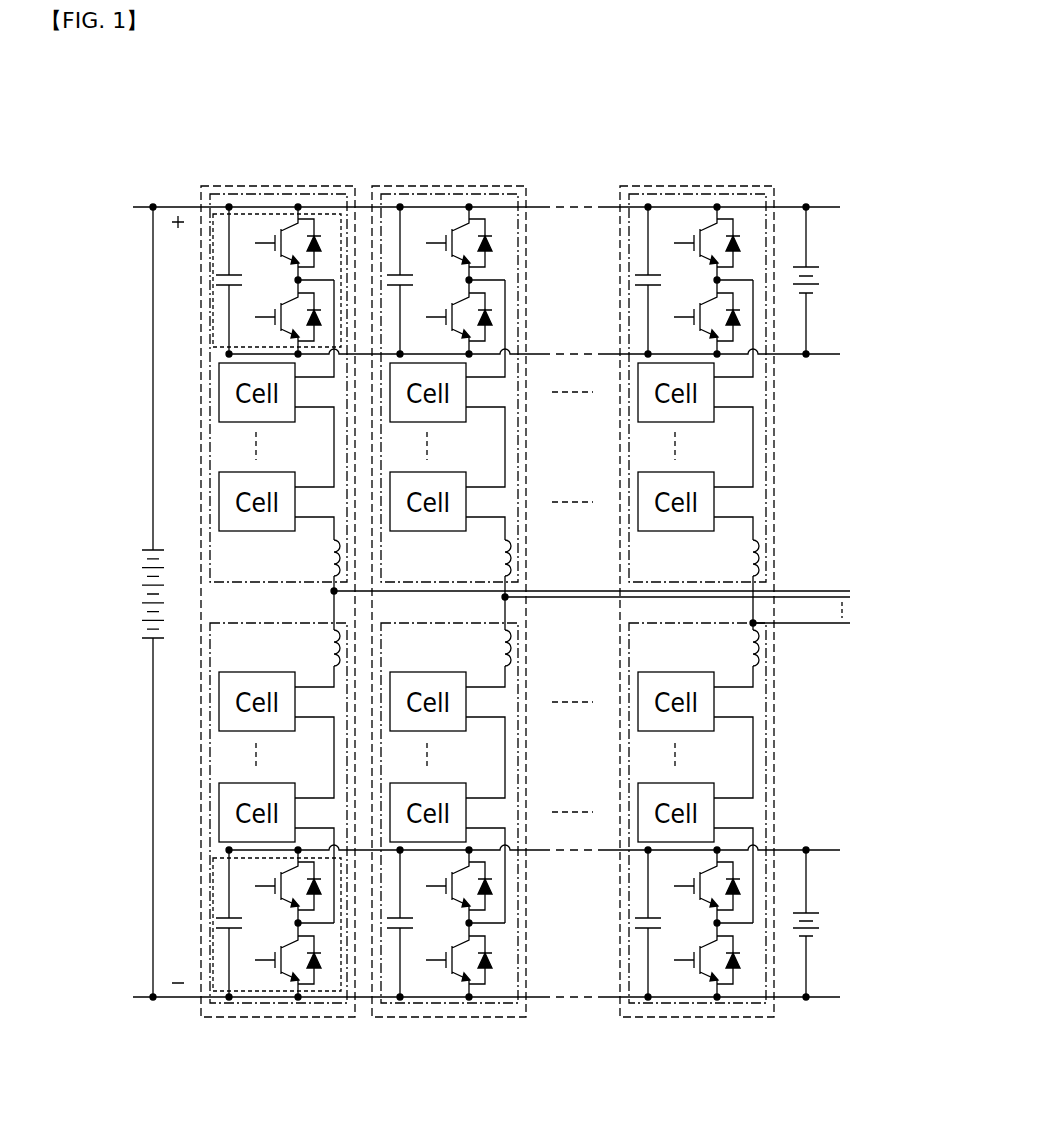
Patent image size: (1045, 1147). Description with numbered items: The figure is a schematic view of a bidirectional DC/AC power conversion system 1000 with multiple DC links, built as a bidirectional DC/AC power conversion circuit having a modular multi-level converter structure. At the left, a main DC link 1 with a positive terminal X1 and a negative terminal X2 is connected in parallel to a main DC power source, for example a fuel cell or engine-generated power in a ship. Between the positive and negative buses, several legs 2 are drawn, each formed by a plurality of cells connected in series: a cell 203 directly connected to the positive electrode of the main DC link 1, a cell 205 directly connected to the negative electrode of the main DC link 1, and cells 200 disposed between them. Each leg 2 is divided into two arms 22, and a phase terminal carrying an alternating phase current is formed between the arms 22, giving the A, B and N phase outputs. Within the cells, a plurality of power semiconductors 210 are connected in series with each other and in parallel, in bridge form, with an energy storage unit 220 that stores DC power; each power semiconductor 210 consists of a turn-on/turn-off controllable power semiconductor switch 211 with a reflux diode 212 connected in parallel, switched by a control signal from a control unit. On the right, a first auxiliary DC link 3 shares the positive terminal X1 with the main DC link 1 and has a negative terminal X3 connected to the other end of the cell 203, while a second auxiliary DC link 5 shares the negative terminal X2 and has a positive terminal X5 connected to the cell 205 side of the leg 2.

The DC/AC power conversion system 1000 is at (98, 105).
The main DC link 1 is at (106, 561).
The leg 2 is at (233, 186).
The first auxiliary DC link 3 is at (852, 277).
The second auxiliary DC link 5 is at (852, 918).
The arm 22 is at (212, 360).
The cell 200 is at (219, 505).
The cell 203 is at (322, 214).
The cell 205 is at (327, 990).
The power semiconductor 210 is at (253, 874).
The power semiconductor switch 211 is at (275, 952).
The reflux diode 212 is at (320, 973).
The energy storage unit 220 is at (229, 918).
The positive terminal X1 is at (790, 207).
The negative terminal X2 is at (790, 1000).
The negative terminal X3 is at (792, 357).
The positive terminal X5 is at (793, 848).